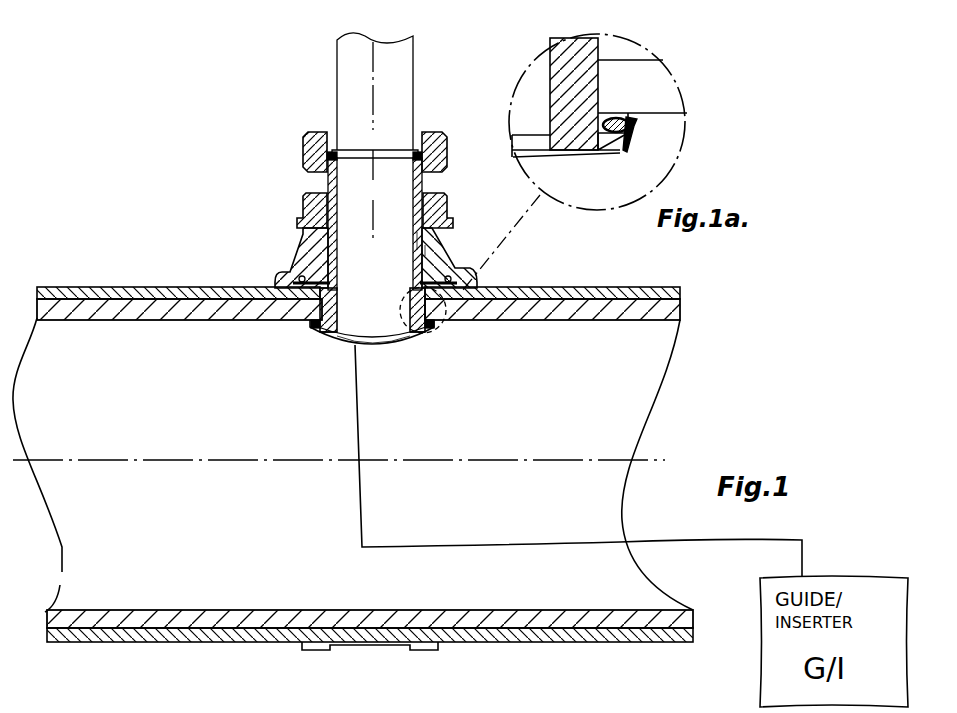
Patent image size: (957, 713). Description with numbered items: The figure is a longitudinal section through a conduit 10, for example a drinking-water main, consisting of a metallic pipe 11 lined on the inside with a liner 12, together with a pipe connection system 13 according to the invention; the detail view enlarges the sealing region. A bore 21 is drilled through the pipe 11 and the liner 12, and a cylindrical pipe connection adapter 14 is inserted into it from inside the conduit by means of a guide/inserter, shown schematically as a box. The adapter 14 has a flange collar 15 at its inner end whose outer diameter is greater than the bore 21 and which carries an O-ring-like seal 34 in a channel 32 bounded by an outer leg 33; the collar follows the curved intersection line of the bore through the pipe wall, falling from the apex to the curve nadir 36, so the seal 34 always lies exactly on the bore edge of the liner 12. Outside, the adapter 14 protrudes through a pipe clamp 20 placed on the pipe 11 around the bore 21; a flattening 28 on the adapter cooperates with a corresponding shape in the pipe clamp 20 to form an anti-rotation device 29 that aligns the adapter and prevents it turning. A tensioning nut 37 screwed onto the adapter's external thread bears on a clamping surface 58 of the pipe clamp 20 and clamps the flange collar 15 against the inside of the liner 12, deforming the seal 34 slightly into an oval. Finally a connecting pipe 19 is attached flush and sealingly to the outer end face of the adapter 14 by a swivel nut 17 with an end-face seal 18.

In FIG. 1, the conduit 10 is at (130, 204).
In FIG. 1, the pipe 11 is at (111, 290).
In FIG. 1, the liner 12 is at (140, 312).
In FIG. 1A, the liner 12 is at (665, 107).
In FIG. 1, the pipe connection system 13 is at (270, 123).
In FIG. 1, the pipe connection adapter 14 is at (328, 187).
In FIG. 1, the flange collar 15 is at (341, 339).
In FIG. 1A, the flange collar 15 is at (593, 147).
In FIG. 1, the swivel nut 17 is at (321, 131).
In FIG. 1, the end-face seal 18 is at (427, 132).
In FIG. 1, the connecting pipe 19 is at (403, 83).
In FIG. 1, the pipe clamp 20 is at (307, 255).
In FIG. 1, the bore 21 is at (312, 325).
In FIG. 1, the flattening 28 is at (432, 236).
In FIG. 1, the anti-rotation device 29 is at (423, 251).
In FIG. 1A, the channel 32 is at (627, 153).
In FIG. 1A, the outer leg 33 is at (637, 123).
In FIG. 1, the seal 34 is at (432, 337).
In FIG. 1A, the seal 34 is at (620, 115).
In FIG. 1, the curve nadir 36 is at (378, 345).
In FIG. 1, the tensioning nut 37 is at (440, 197).
In FIG. 1, the clamping surface 58 is at (305, 215).